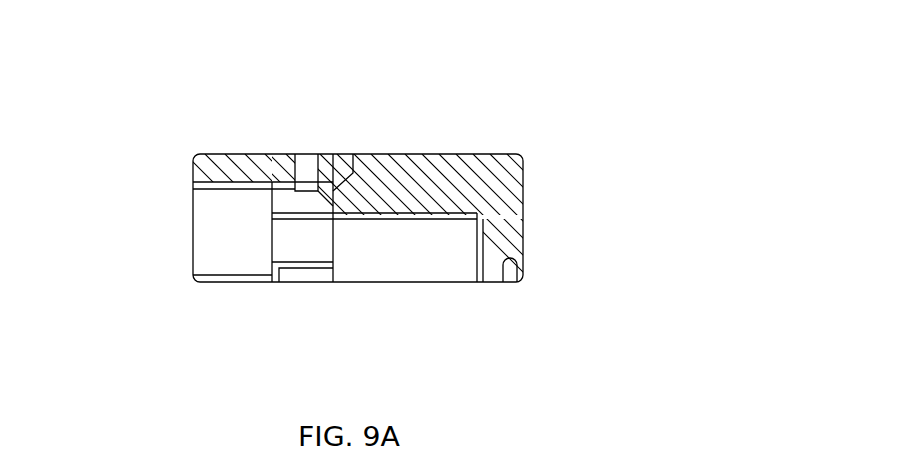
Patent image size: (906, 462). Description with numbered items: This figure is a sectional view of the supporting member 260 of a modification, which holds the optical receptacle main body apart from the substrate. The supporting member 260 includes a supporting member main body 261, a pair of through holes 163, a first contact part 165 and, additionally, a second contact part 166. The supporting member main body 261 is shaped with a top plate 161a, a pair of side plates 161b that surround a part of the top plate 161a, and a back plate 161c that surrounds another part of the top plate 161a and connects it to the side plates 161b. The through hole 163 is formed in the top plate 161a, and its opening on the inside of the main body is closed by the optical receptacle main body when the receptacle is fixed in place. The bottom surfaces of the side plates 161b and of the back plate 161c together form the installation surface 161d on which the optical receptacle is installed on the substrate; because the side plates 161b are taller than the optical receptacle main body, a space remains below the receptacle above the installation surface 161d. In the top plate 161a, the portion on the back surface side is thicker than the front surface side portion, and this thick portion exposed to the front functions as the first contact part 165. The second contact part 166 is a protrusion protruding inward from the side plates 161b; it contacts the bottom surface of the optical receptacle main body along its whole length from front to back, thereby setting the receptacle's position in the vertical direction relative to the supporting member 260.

The supporting member 260 is at (688, 87).
The supporting member main body 261 is at (523, 190).
The top plate 161a is at (428, 152).
The side plate 161b is at (207, 283).
The back plate 161c is at (488, 276).
The installation surface 161d is at (375, 283).
The through hole 163 is at (308, 152).
The first contact part 165 is at (252, 191).
The second contact part 166 is at (280, 283).